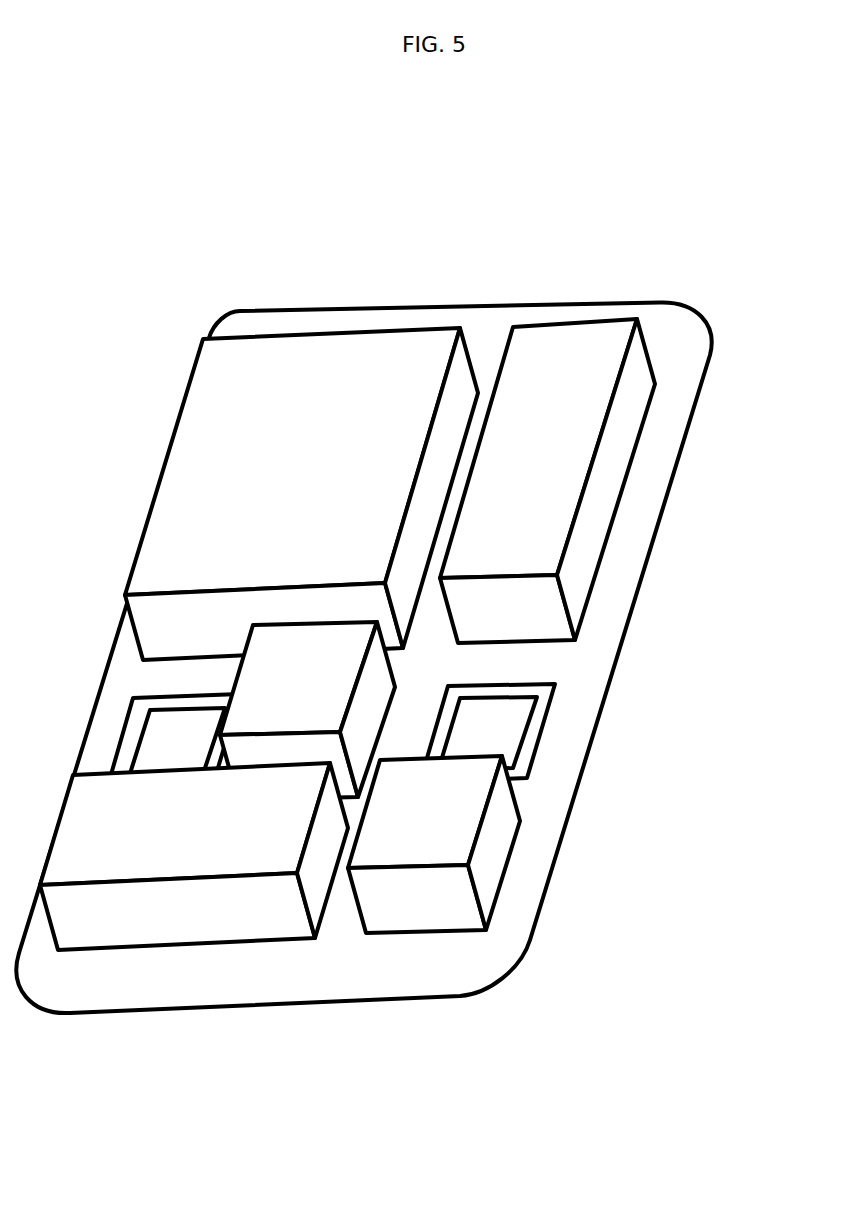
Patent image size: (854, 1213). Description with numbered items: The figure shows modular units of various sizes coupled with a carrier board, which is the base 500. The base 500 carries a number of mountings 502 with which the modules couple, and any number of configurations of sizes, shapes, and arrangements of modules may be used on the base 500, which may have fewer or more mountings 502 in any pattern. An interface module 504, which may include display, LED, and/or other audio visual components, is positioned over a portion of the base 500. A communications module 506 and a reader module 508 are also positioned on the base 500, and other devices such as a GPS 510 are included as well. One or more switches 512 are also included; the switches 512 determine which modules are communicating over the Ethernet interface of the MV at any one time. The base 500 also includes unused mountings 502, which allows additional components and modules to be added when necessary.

The base 500 is at (572, 305).
The mountings 502 is at (528, 727).
The interface module 504 is at (317, 355).
The communications module 506 is at (210, 847).
The reader module 508 is at (580, 518).
The GPS 510 is at (443, 840).
The switches 512 is at (287, 682).